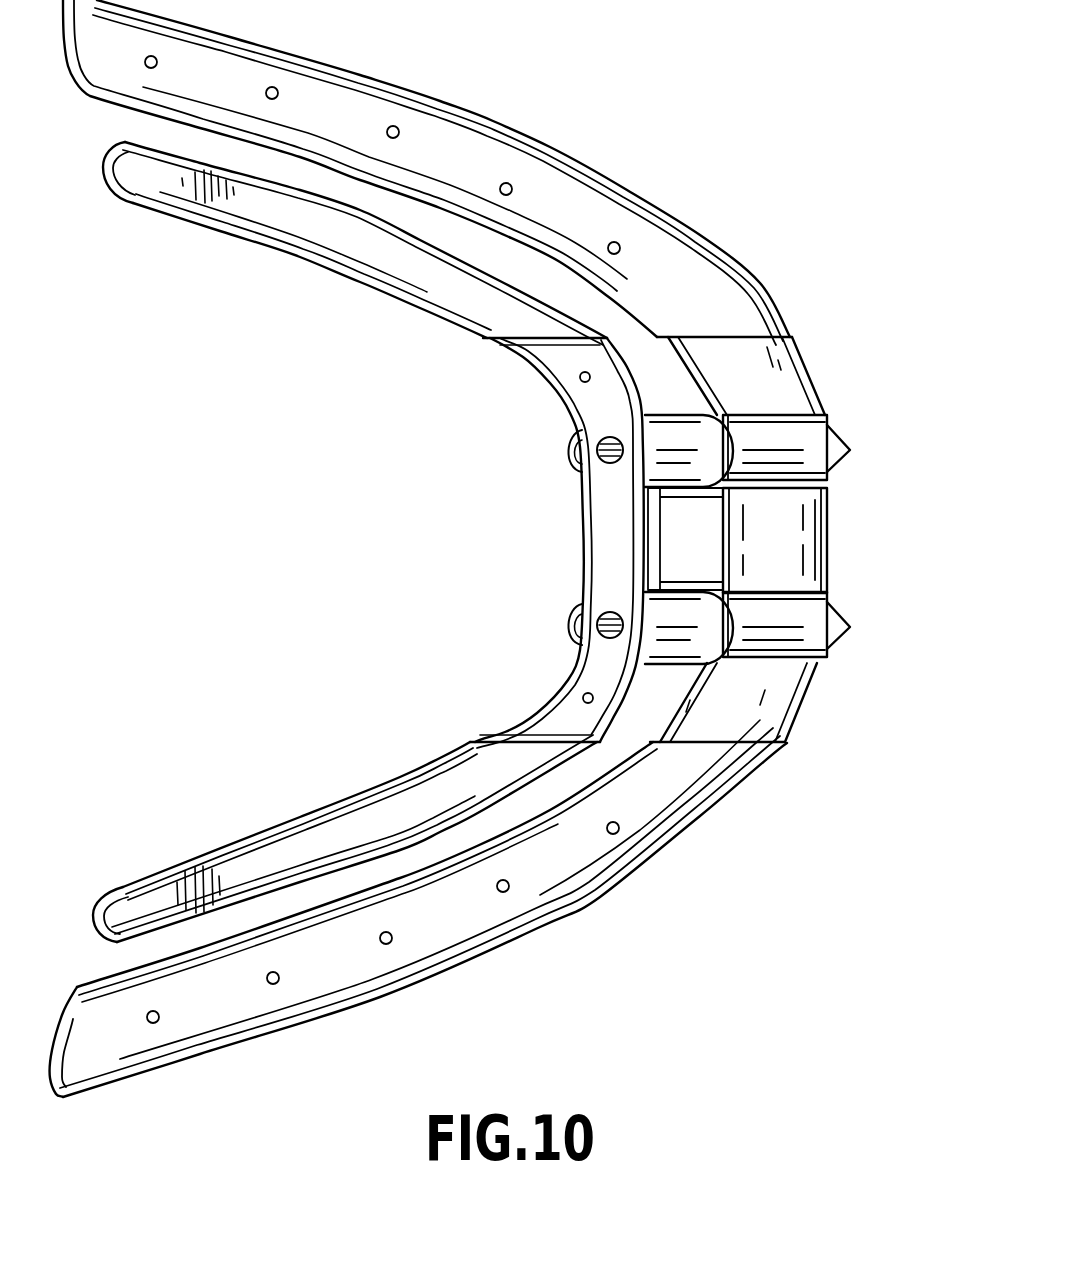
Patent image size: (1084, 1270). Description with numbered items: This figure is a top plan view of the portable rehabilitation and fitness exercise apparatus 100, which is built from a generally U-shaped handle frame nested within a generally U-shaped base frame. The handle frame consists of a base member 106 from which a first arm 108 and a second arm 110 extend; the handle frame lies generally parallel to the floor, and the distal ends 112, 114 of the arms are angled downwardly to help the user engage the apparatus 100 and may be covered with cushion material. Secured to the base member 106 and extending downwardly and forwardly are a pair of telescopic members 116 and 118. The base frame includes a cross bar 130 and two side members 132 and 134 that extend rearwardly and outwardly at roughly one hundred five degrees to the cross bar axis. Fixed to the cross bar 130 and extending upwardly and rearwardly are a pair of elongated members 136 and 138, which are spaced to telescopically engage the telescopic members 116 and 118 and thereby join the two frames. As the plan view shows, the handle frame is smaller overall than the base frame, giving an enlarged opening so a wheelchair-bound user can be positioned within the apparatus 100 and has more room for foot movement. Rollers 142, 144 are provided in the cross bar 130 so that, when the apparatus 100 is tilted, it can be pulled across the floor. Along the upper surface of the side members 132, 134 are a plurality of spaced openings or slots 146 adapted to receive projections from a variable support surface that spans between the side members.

The portable exercise apparatus 100 is at (628, 84).
The base member 106 is at (559, 543).
The first arm 108 is at (355, 243).
The second arm 110 is at (345, 838).
The distal end 112 is at (143, 208).
The distal end 114 is at (140, 877).
The telescopic member 116 is at (570, 462).
The telescopic member 118 is at (567, 638).
The cross bar 130 is at (810, 532).
The side member 132 is at (387, 100).
The side member 134 is at (418, 930).
The elongated member 136 is at (777, 393).
The elongated member 138 is at (783, 700).
The roller 142 is at (850, 450).
The roller 144 is at (845, 622).
The openings or slots 146 is at (271, 984).